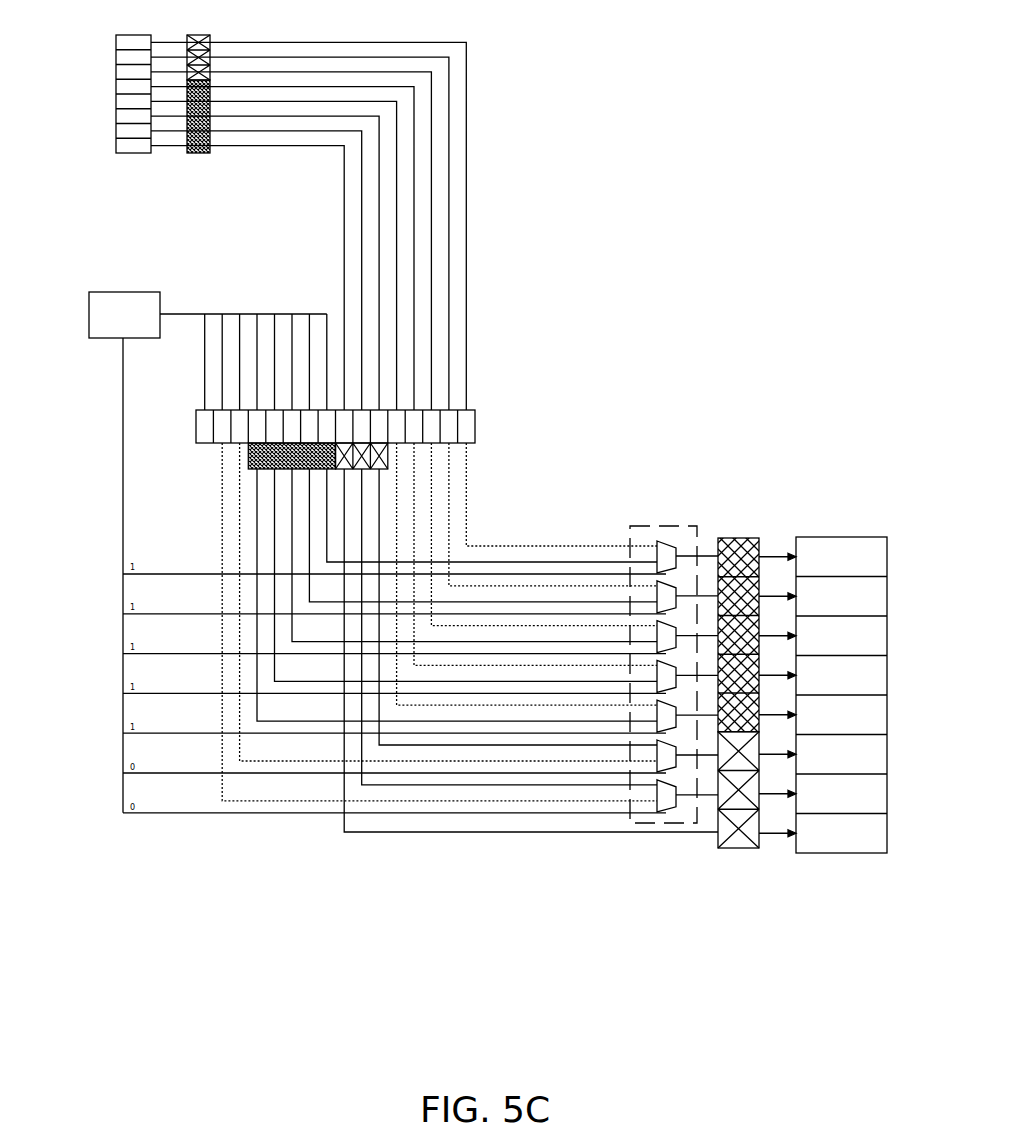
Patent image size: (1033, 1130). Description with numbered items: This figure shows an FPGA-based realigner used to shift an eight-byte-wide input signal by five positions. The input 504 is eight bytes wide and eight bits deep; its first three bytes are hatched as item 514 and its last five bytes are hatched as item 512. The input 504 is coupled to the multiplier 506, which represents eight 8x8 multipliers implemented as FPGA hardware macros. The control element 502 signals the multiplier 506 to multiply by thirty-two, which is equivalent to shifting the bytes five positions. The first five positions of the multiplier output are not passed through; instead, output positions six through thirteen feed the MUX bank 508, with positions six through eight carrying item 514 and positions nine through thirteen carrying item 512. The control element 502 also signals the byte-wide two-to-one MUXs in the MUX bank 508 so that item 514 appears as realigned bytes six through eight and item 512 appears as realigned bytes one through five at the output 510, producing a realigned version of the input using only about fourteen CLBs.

The control element 502 is at (124, 315).
The input 504 is at (129, 35).
The multiplier 506 is at (476, 416).
The MUX bank 508 is at (630, 526).
The output 510 is at (820, 537).
The last five bytes of the input signal 512 is at (208, 155).
The first three bytes of the input signal 514 is at (193, 35).